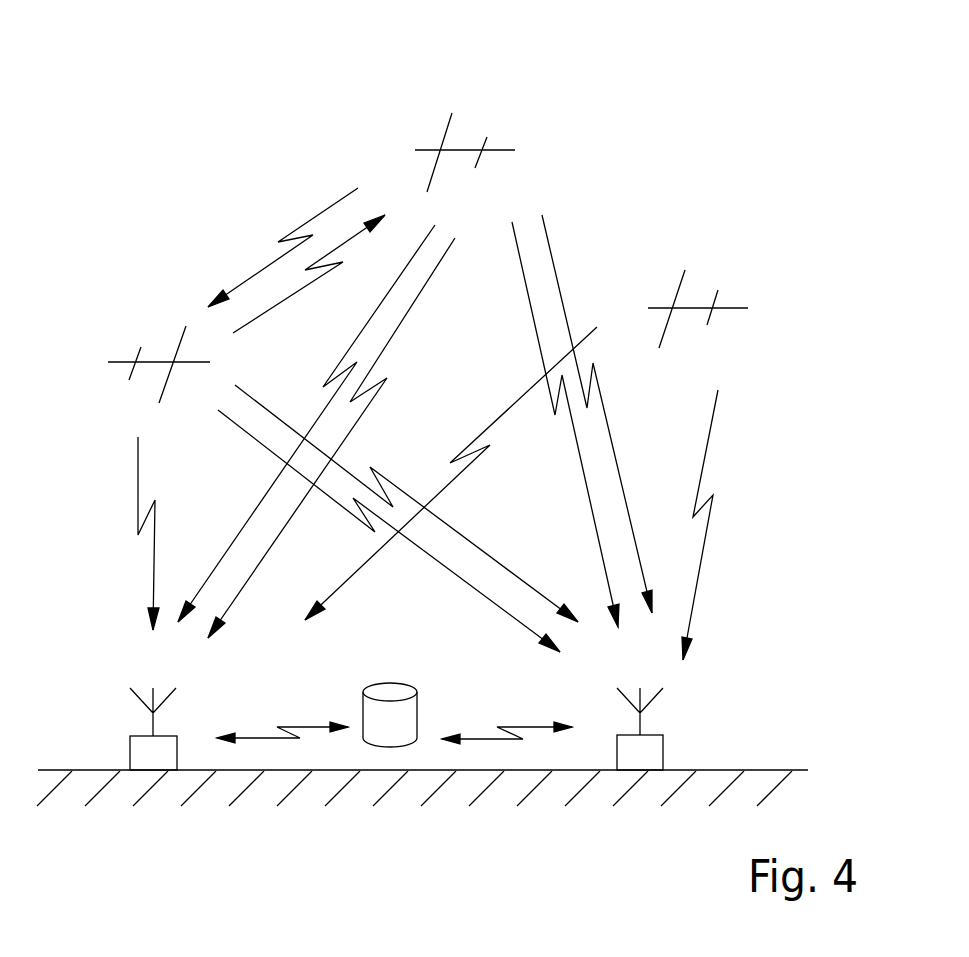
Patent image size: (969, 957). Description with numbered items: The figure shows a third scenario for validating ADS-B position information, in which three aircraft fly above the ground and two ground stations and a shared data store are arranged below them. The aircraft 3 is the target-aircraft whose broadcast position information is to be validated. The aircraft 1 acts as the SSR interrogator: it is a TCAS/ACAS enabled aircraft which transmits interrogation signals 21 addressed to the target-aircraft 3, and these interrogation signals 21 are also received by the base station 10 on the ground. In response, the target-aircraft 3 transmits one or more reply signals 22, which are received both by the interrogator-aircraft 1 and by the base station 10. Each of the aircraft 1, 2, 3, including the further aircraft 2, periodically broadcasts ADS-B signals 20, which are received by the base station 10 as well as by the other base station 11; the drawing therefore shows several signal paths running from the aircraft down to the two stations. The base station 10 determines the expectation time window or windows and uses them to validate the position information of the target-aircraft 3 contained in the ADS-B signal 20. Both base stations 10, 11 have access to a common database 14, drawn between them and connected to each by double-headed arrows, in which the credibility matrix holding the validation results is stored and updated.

The interrogator-aircraft 1 is at (158, 345).
The aircraft 2 is at (700, 282).
The target-aircraft 3 is at (468, 125).
The base station 10 is at (643, 750).
The other base station 11 is at (140, 750).
The database 14 is at (410, 712).
The ADS-B signal 20 is at (397, 330).
The interrogation signal 21 is at (298, 293).
The reply signal 22 is at (262, 268).